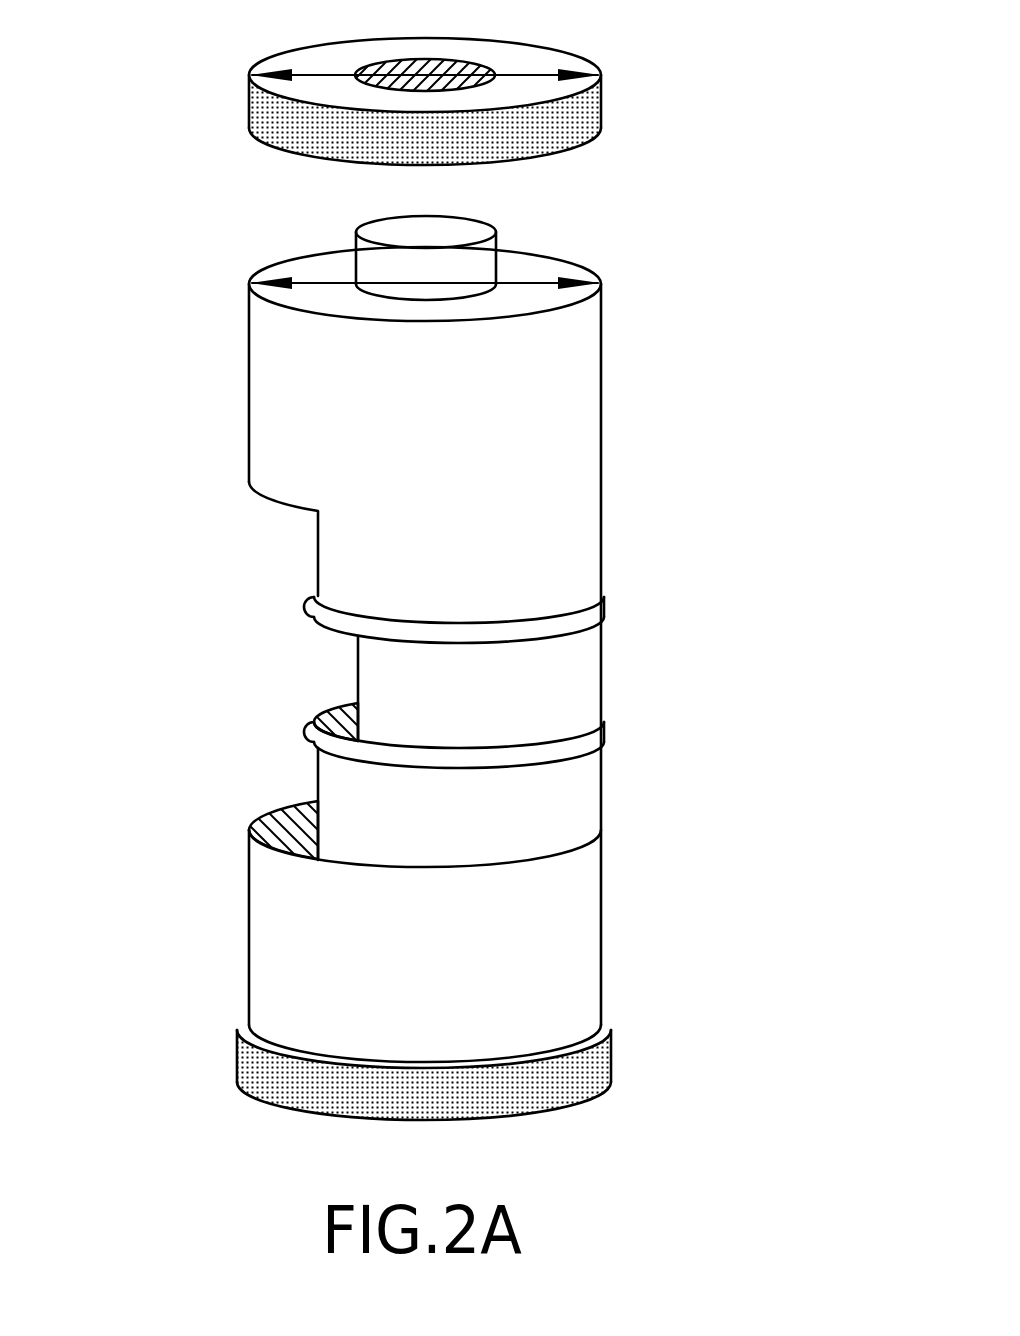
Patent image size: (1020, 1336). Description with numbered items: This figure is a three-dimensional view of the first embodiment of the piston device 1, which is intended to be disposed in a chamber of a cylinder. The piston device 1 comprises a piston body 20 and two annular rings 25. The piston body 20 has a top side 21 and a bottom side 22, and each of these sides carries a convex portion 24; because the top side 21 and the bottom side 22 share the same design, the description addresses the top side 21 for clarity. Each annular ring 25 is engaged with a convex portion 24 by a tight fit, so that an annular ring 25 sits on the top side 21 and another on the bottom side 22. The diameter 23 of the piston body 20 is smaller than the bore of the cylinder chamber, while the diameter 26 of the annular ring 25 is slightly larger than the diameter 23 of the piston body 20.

The piston device 1 is at (395, 591).
The piston body 20 is at (602, 661).
The top side 21 is at (542, 300).
The bottom side 22 is at (605, 1030).
The diameter 23 is at (600, 283).
The convex portion 24 is at (488, 226).
The annular ring 25 is at (582, 55).
The diameter 26 is at (254, 78).